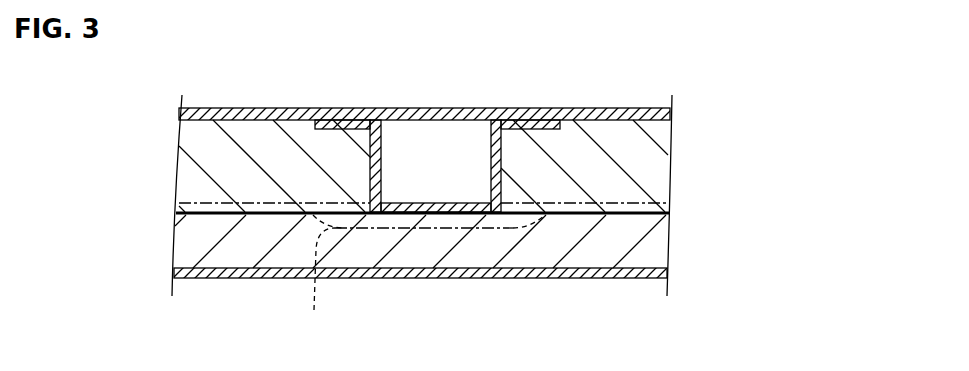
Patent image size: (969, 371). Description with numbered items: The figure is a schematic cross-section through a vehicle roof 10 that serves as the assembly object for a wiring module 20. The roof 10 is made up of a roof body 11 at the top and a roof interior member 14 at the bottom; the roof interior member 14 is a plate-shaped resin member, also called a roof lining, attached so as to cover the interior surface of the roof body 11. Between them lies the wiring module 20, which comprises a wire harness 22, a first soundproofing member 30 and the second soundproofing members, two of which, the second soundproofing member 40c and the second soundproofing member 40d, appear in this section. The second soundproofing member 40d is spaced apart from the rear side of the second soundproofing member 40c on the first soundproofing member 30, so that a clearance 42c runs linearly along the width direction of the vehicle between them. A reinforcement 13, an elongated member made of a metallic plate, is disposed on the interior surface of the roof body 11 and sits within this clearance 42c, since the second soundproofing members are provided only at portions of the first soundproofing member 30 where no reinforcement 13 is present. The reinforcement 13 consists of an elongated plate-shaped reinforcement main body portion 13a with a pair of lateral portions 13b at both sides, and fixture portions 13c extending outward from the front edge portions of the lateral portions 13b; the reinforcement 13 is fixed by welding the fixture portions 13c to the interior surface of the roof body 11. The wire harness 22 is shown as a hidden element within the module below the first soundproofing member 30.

The roof 10 is at (615, 86).
The roof body 11 is at (640, 108).
The reinforcement 13 is at (455, 133).
The reinforcement main body portion 13a is at (437, 210).
The lateral portion 13b is at (381, 150).
The fixture portion 13c is at (345, 138).
The roof interior member 14 is at (619, 275).
The wiring module 20 is at (420, 284).
The wire harness 22 is at (318, 282).
The first soundproofing member 30 is at (528, 245).
The second soundproofing member 40c is at (650, 160).
The second soundproofing member 40d is at (262, 130).
The clearance 42c is at (402, 215).